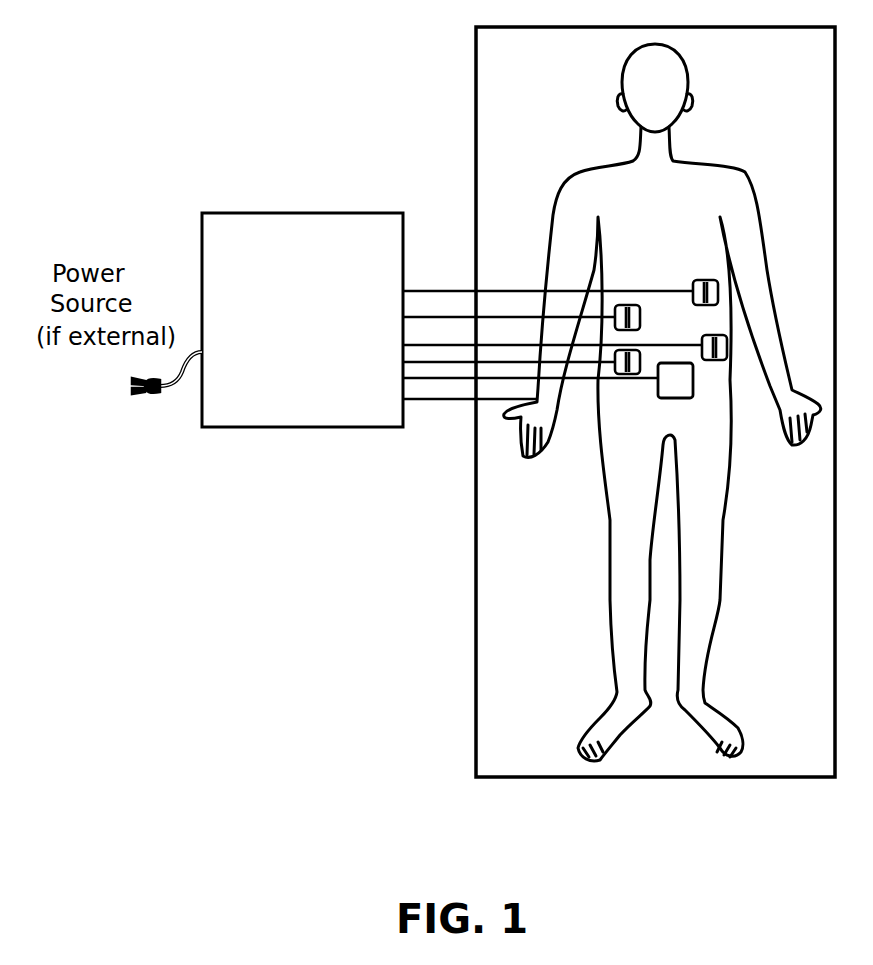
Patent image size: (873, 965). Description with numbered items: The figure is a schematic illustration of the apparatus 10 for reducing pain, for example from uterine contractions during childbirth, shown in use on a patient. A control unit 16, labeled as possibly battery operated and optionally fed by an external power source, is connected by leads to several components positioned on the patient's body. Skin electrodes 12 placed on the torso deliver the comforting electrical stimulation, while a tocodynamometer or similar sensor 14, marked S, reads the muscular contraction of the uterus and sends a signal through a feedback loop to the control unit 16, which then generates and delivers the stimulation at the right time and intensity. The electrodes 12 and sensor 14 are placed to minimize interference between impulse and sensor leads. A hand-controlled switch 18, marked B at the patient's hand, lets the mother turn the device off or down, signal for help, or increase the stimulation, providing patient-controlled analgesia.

The apparatus 10 is at (244, 200).
The skin electrodes 12 is at (641, 350).
The tocodynamometer or sensor 14 is at (680, 398).
The control unit 16 is at (390, 213).
The hand-controlled switch 18 is at (552, 440).